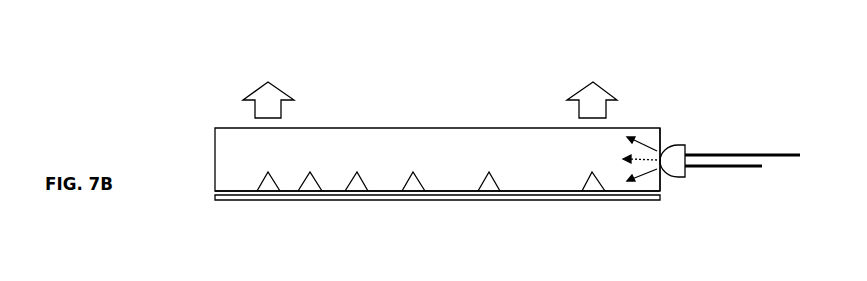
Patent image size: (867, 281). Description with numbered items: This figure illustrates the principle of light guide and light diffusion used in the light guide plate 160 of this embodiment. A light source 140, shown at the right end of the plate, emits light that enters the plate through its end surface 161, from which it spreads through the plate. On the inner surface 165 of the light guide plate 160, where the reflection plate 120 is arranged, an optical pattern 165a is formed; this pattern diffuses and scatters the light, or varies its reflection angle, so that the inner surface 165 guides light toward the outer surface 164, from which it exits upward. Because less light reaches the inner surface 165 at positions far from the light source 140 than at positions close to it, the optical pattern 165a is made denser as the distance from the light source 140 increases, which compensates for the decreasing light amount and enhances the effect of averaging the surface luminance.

The light guide plate 160 is at (339, 110).
The outer surface 164 is at (482, 128).
The light incident surface 161 is at (661, 143).
The inner surface 165 is at (437, 220).
The optical pattern 165a is at (318, 184).
The reflection plate 120 is at (618, 200).
The light source 140 is at (676, 177).